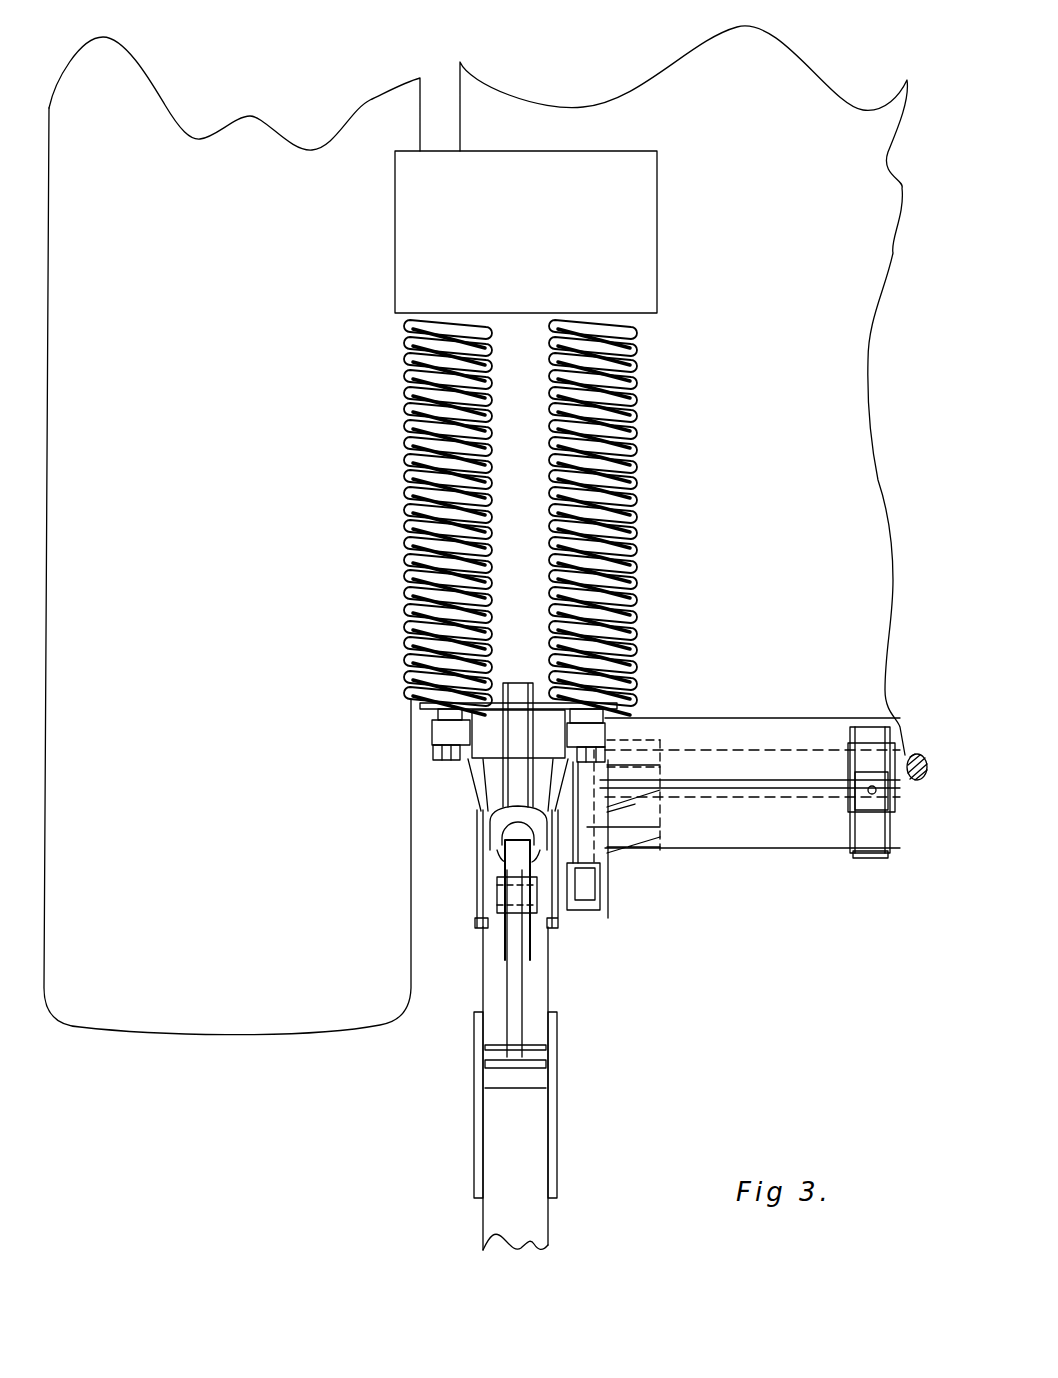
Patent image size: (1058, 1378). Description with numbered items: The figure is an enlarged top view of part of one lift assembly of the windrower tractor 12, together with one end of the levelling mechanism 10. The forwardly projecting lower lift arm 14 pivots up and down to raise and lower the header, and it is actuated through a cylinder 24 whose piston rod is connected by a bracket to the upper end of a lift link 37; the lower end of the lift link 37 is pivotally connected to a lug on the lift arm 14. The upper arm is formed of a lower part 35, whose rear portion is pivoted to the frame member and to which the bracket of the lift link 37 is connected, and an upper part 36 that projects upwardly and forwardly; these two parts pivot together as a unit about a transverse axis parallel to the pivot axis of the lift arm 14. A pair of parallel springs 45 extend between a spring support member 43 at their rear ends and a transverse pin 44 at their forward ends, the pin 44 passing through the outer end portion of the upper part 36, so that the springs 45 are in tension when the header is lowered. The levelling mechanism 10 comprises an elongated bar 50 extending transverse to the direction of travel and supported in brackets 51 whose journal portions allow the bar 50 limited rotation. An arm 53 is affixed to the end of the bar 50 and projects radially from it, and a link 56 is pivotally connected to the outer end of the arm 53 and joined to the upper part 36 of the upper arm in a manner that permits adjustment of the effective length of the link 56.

The levelling mechanism 10 is at (829, 878).
The windrower tractor 12 is at (437, 62).
The lower lift arm 14 is at (475, 1168).
The cylinder 24 is at (502, 848).
The lower part of the upper arm 35 is at (500, 945).
The upper part of the upper arm 36 is at (500, 772).
The lift link 37 is at (517, 987).
The spring support member 43 is at (643, 237).
The transverse pin 44 is at (590, 733).
The springs 45 is at (428, 412).
The elongated bar 50 is at (905, 780).
The bracket 51 is at (847, 813).
The arm 53 is at (605, 890).
The link 56 is at (610, 828).